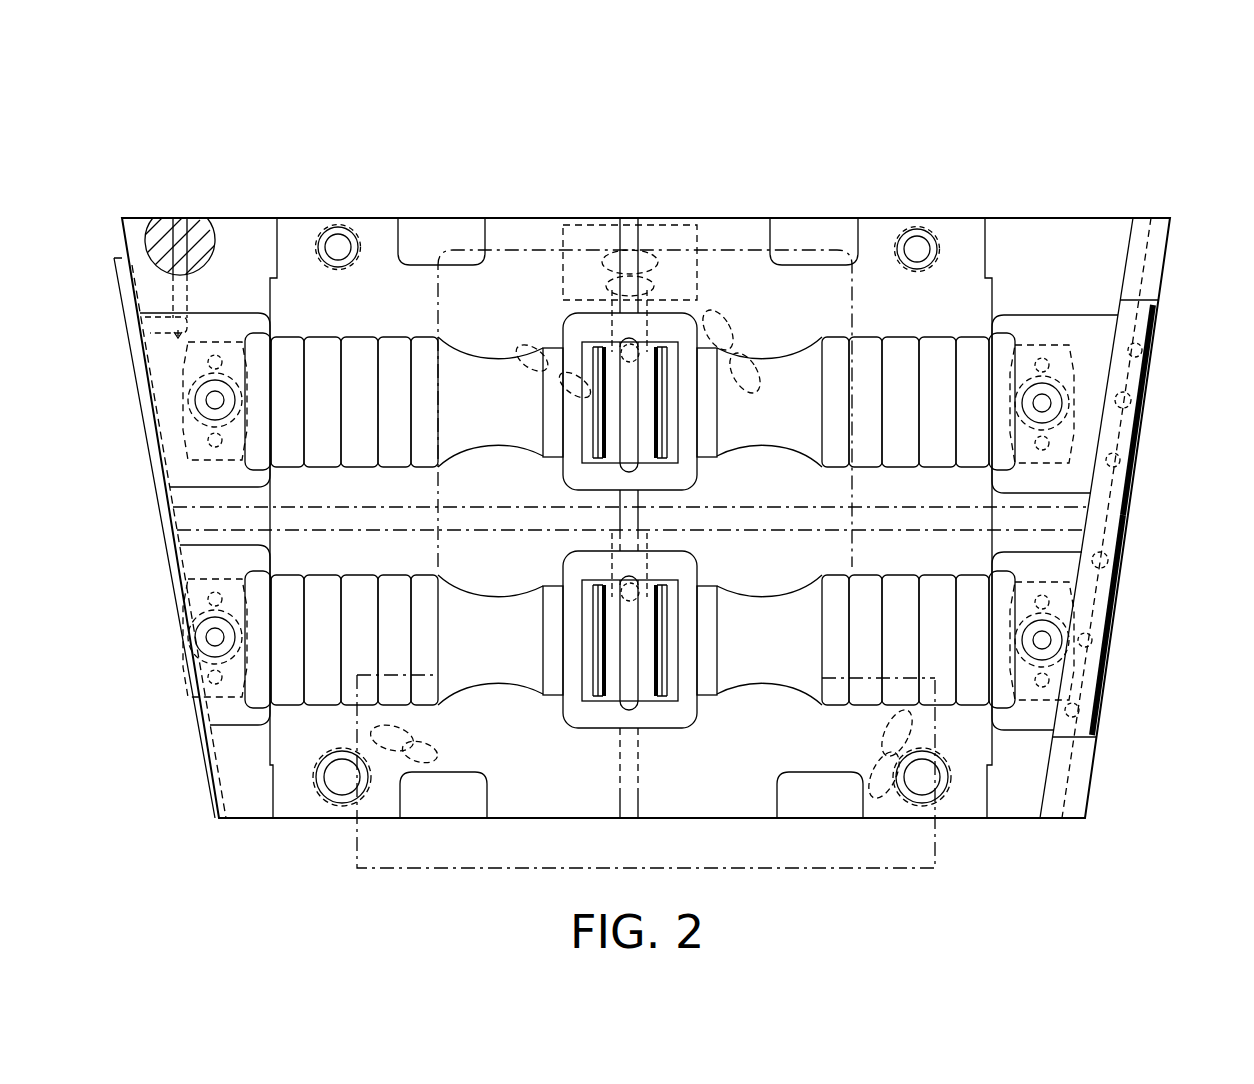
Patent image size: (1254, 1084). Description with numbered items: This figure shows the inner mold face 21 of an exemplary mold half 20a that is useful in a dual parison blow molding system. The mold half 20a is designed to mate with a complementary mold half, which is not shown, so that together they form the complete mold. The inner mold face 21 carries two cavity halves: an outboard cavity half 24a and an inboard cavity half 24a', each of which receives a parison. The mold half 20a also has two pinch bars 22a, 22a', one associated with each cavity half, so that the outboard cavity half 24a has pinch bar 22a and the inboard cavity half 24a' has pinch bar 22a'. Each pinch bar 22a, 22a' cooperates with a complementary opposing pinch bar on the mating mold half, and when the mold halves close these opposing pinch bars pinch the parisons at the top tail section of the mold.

The mold half 20a is at (154, 118).
The inner mold face 21 is at (385, 250).
The outboard cavity half 24a is at (630, 392).
The inboard cavity half 24a' is at (630, 642).
The pinch bar 22a is at (1165, 366).
The pinch bar 22a' is at (1123, 666).